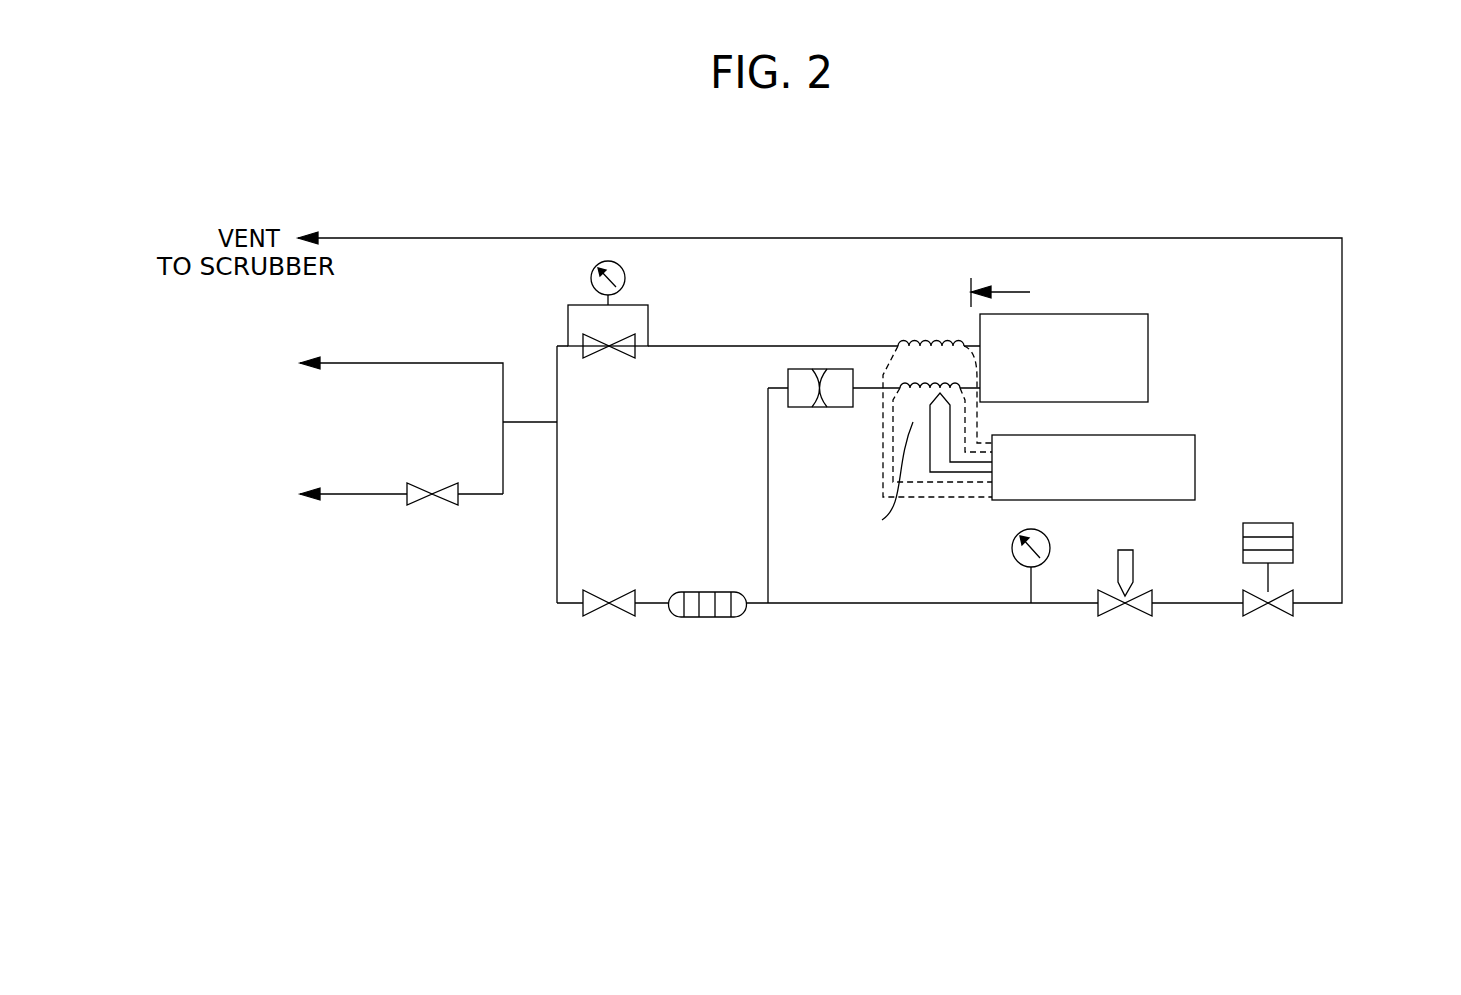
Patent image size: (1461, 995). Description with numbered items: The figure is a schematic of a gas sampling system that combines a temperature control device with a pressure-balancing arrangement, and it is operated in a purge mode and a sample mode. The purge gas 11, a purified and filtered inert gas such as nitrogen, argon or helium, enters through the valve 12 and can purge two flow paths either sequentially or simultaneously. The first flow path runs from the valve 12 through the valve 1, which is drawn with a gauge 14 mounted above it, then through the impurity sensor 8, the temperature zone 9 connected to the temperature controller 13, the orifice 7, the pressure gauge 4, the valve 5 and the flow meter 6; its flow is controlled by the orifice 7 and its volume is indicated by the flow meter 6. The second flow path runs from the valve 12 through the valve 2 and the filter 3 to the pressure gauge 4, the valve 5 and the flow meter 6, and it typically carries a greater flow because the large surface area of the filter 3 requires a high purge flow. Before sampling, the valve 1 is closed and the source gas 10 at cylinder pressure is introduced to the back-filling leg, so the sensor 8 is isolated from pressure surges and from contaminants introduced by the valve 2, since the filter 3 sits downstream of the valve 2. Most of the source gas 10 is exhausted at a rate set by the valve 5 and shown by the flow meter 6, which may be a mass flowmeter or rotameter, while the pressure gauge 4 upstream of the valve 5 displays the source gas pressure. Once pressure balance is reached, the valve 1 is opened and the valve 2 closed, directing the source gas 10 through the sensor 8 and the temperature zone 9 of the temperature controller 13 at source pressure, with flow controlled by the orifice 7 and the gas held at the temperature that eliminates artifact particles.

The valve 1 is at (615, 353).
The valve 2 is at (605, 607).
The filter 3 is at (742, 613).
The pressure gauge 4 is at (1012, 548).
The valve 5 is at (1133, 562).
The flow meter 6 is at (1270, 523).
The orifice 7 is at (799, 369).
The impurity sensor 8 is at (1094, 314).
The temperature zone 9 is at (903, 340).
The source gas 10 is at (305, 362).
The purge gas 11 is at (305, 492).
The valve 12 is at (458, 486).
The temperature controller 13 is at (1196, 458).
The pressure gauge 14 is at (626, 280).